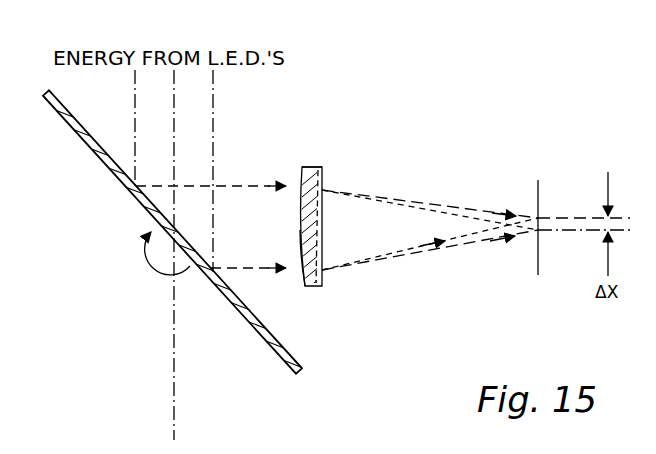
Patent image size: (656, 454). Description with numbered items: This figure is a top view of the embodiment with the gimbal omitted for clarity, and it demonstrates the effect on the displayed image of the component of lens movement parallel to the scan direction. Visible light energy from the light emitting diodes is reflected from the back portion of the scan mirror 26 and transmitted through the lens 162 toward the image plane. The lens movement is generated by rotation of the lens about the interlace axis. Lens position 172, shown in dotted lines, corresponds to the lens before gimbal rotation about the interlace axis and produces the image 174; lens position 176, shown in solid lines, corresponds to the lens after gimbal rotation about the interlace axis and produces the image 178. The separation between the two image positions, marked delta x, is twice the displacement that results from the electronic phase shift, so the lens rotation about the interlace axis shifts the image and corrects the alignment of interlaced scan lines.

The scan mirror 26 is at (73, 134).
The lens 162 is at (320, 222).
The lens position 172 is at (302, 257).
The image 174 is at (540, 232).
The lens position 176 is at (303, 170).
The image 178 is at (562, 218).